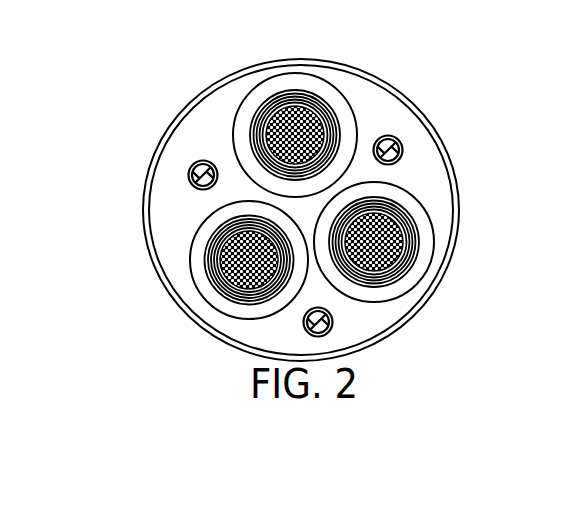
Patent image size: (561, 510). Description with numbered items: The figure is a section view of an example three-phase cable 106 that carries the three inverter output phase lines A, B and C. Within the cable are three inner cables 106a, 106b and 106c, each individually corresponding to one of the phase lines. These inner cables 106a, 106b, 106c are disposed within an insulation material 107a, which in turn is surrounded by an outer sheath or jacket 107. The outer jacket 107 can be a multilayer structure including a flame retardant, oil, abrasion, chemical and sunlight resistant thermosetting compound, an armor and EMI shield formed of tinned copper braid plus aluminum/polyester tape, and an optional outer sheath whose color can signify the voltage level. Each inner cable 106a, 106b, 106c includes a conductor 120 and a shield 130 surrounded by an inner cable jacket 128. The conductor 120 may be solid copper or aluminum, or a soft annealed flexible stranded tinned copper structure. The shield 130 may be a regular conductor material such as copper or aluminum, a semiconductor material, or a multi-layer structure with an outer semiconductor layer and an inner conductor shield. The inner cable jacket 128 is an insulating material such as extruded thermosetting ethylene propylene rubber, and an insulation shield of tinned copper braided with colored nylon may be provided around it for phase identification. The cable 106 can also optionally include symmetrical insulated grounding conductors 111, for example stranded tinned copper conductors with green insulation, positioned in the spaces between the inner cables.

The three-phase cable 106 is at (117, 60).
The inner cable 106a is at (337, 80).
The inner cable 106b is at (437, 212).
The inner cable 106c is at (190, 290).
The outer jacket 107 is at (168, 125).
The insulation material 107a is at (225, 139).
The insulated grounding conductor 111 is at (190, 168).
The conductor 120 is at (318, 113).
The inner cable jacket 128 is at (245, 105).
The shield 130 is at (290, 92).